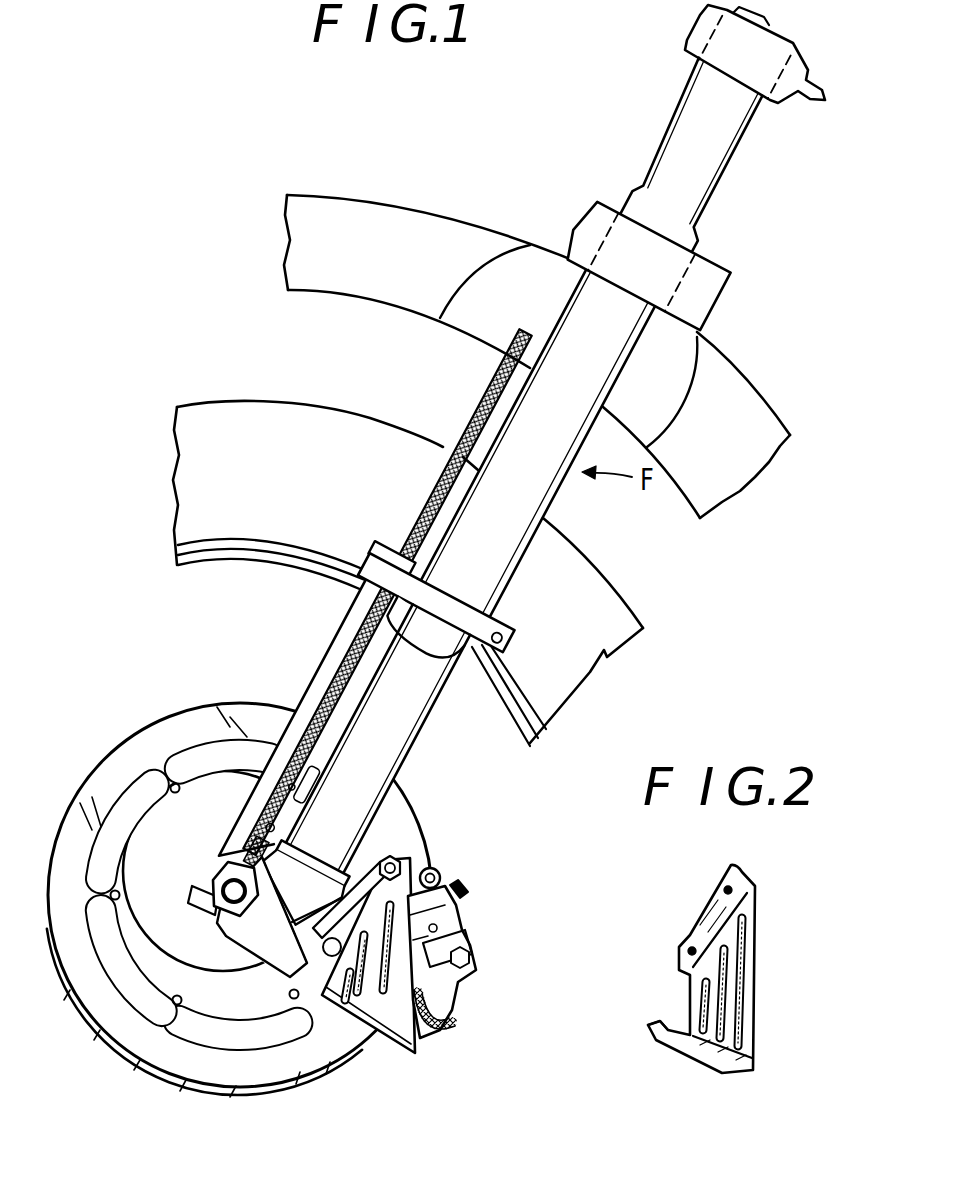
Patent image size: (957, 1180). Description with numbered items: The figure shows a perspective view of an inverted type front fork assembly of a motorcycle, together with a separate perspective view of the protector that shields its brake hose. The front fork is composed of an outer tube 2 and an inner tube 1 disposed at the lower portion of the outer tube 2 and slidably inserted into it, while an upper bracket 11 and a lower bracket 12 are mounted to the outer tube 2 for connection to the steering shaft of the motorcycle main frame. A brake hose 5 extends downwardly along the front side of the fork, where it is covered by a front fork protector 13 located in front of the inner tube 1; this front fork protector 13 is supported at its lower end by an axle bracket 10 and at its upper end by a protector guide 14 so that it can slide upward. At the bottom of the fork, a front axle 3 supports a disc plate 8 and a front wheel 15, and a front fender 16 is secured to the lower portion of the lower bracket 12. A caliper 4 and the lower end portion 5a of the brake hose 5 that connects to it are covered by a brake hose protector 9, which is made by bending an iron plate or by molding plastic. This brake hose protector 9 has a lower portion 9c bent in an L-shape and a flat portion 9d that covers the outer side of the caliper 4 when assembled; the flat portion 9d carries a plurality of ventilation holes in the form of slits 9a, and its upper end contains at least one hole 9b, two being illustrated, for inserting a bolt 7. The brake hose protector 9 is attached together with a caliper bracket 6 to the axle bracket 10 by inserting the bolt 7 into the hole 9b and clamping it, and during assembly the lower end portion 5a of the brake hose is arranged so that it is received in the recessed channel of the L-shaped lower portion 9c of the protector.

In FIG. 1, the inner tube 1 is at (406, 733).
In FIG. 1, the outer tube 2 is at (550, 500).
In FIG. 1, the front axle 3 is at (210, 912).
In FIG. 1, the caliper 4 is at (460, 933).
In FIG. 1, the brake hose 5 is at (479, 403).
In FIG. 1, the lower end portion of the brake hose 5a is at (437, 1030).
In FIG. 1, the caliper bracket 6 is at (440, 875).
In FIG. 1, the bolt 7 is at (413, 847).
In FIG. 1, the disc plate 8 is at (308, 1066).
In FIG. 1, the brake hose protector 9 is at (372, 835).
In FIG. 2, the brake hose protector 9 is at (772, 931).
In FIG. 1, the slits 9a is at (440, 990).
In FIG. 2, the slits 9a is at (745, 1005).
In FIG. 2, the hole 9b is at (724, 882).
In FIG. 2, the lower portion 9c is at (660, 1043).
In FIG. 2, the flat portion 9d is at (755, 1045).
In FIG. 1, the axle bracket 10 is at (252, 947).
In FIG. 1, the upper bracket 11 is at (804, 66).
In FIG. 1, the lower bracket 12 is at (708, 310).
In FIG. 1, the front fork protector 13 is at (323, 657).
In FIG. 1, the protector guide 14 is at (466, 650).
In FIG. 1, the front wheel 15 is at (593, 663).
In FIG. 1, the front fender 16 is at (762, 430).